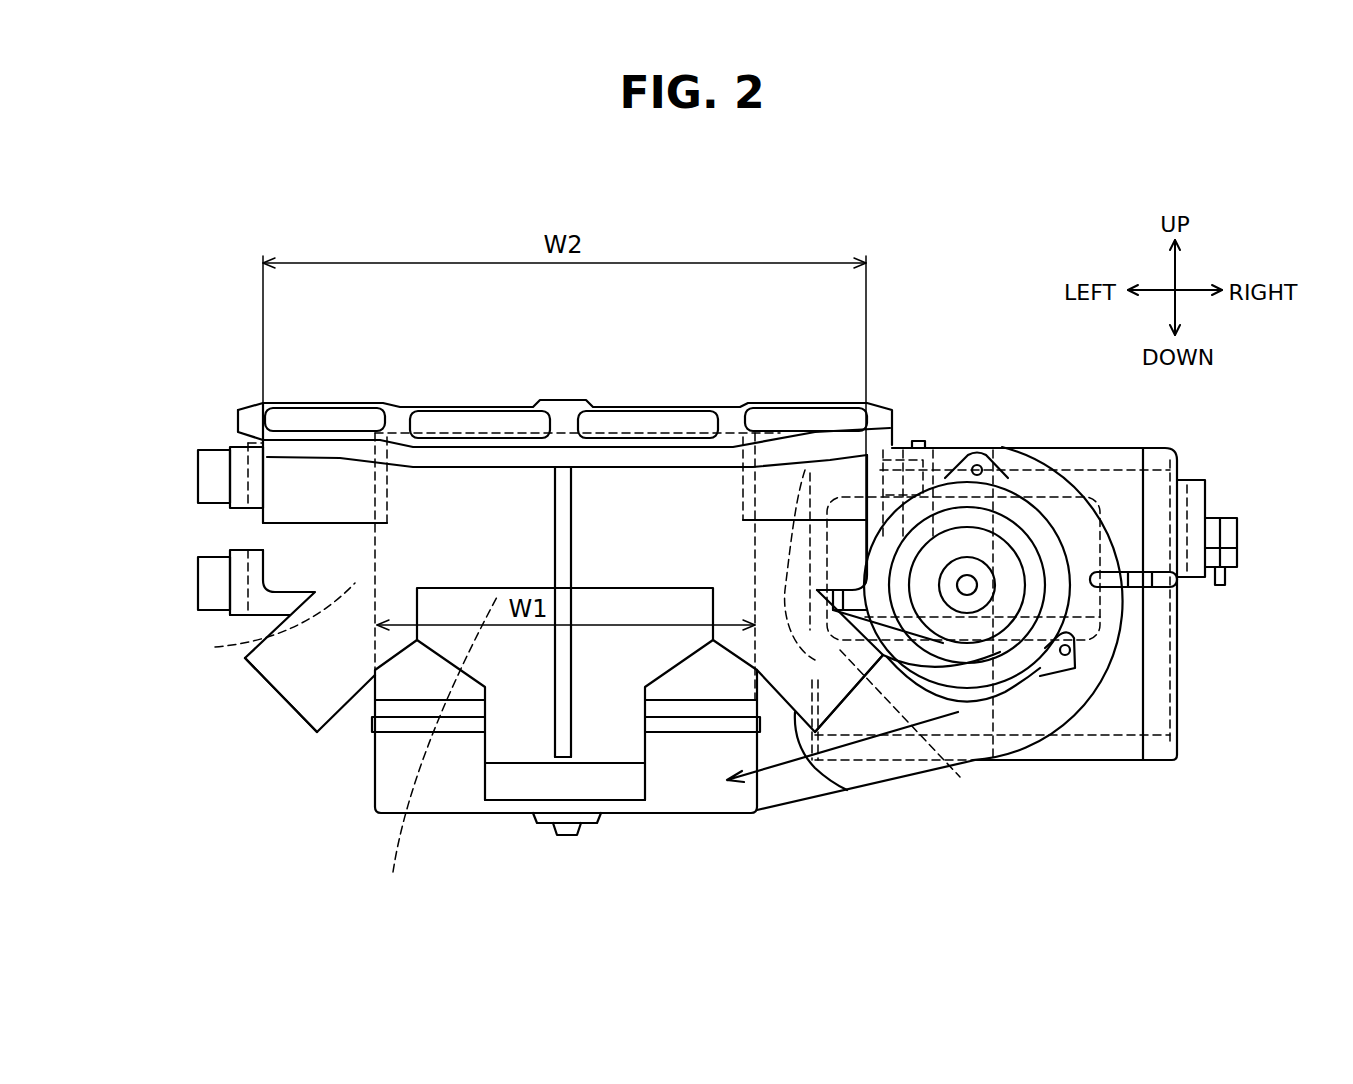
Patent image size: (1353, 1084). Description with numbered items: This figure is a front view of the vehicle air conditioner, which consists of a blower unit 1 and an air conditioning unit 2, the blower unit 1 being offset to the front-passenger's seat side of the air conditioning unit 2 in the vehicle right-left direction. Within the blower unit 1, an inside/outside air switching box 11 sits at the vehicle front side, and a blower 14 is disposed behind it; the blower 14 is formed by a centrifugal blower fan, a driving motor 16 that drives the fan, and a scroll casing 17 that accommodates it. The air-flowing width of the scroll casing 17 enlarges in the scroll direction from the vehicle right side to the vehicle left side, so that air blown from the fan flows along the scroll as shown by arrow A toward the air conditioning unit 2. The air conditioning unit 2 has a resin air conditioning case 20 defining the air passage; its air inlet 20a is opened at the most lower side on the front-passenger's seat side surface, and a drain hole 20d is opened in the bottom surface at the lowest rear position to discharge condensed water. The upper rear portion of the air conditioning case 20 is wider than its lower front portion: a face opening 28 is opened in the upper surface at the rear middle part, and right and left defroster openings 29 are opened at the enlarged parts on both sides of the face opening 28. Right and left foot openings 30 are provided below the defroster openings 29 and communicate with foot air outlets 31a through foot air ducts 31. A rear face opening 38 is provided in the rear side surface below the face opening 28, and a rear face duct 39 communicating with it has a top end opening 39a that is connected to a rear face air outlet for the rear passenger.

The blower unit 1 is at (1017, 420).
The air conditioning unit 2 is at (397, 364).
The inside/outside air switching box 11 is at (1177, 660).
The blower 14 is at (1063, 700).
The driving motor 16 is at (1007, 565).
The scroll casing 17 is at (1140, 678).
The air conditioning case 20 is at (448, 500).
The air inlet 20a is at (760, 792).
The drain hole 20d is at (547, 823).
The face opening 28 is at (495, 420).
The defroster openings 29 is at (312, 412).
The foot openings 30 is at (584, 697).
The foot air ducts 31 is at (345, 708).
The foot air outlets 31a is at (283, 705).
The rear face opening 38 is at (437, 752).
The rear face duct 39 is at (485, 745).
The top end opening 39a is at (623, 800).
The arrow A is at (797, 763).